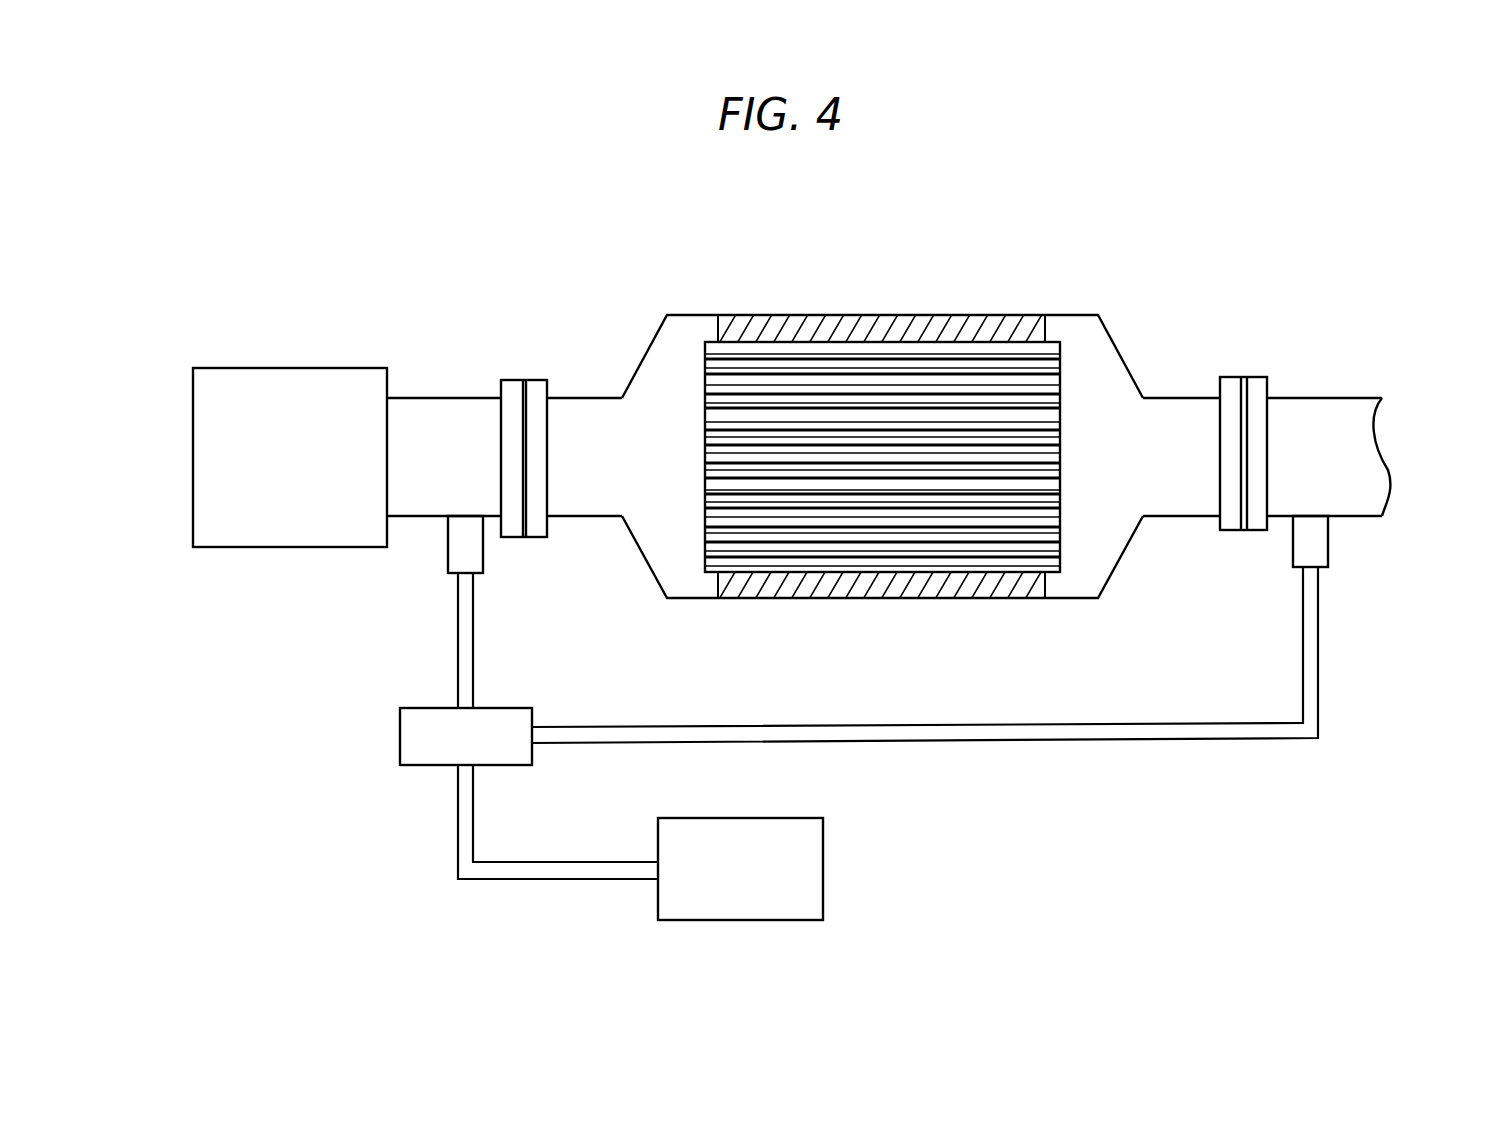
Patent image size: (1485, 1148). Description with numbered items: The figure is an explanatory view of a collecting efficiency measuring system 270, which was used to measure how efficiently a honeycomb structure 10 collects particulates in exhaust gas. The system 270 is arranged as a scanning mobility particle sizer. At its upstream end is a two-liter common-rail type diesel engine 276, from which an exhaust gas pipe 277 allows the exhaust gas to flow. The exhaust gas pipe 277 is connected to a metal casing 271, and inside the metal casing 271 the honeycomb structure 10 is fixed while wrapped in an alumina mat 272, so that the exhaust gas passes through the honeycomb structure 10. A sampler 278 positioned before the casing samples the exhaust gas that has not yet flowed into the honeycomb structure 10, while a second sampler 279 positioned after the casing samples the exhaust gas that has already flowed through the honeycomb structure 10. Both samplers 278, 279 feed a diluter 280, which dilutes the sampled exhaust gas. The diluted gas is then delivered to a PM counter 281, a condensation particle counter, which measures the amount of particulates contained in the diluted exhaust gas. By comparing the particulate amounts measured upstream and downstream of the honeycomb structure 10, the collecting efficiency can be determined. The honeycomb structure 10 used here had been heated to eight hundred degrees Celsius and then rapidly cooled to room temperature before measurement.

The collecting efficiency measuring system 270 is at (1010, 228).
The honeycomb structure 10 is at (1100, 355).
The metal casing 271 is at (1075, 598).
The alumina mat 272 is at (827, 328).
The diesel engine 276 is at (288, 392).
The exhaust gas pipe 277 is at (437, 420).
The sampler 278 is at (447, 549).
The sampler 279 is at (1333, 545).
The diluter 280 is at (400, 730).
The PM counter 281 is at (823, 865).